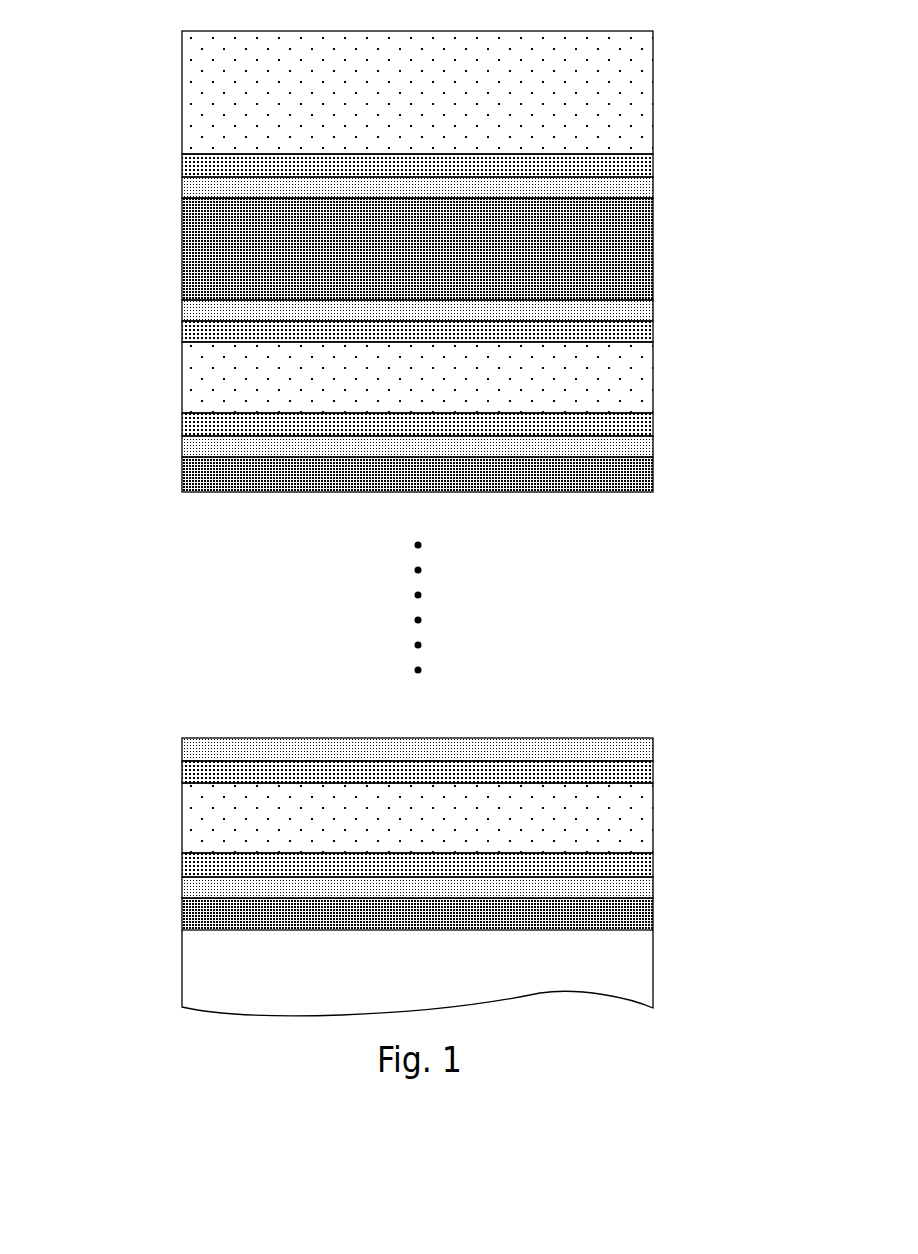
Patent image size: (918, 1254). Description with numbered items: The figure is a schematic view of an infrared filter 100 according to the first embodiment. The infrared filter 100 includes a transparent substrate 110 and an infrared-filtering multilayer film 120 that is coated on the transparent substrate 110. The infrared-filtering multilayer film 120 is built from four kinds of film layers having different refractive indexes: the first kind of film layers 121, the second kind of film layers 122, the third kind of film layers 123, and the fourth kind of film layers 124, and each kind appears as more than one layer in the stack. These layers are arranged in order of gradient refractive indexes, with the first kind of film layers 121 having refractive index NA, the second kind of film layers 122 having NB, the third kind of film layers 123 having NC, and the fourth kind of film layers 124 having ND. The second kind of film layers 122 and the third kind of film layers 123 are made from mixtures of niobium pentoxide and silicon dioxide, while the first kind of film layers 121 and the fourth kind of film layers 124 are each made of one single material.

The infrared filter 100 is at (105, 53).
The transparent substrate 110 is at (640, 970).
The infrared-filtering multilayer film 120 is at (157, 30).
The first kind of film layers 121 is at (655, 247).
The second kind of film layers 122 is at (655, 188).
The third kind of film layers 123 is at (645, 165).
The fourth kind of film layers 124 is at (640, 97).